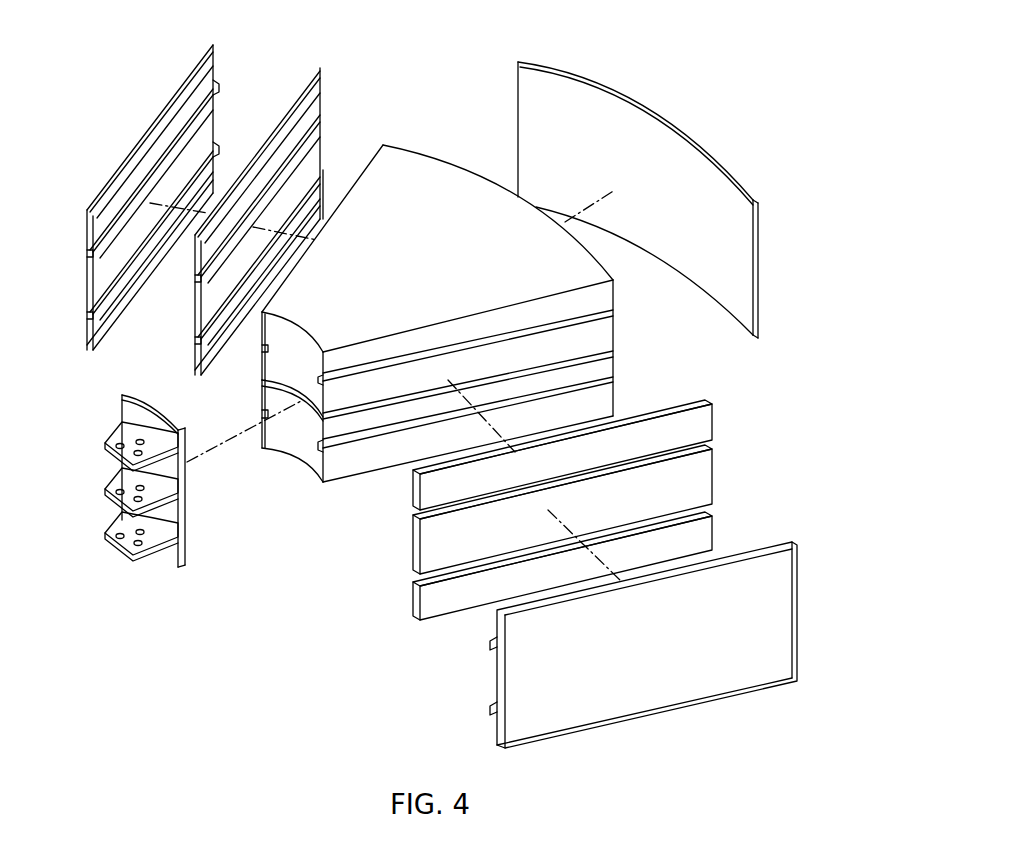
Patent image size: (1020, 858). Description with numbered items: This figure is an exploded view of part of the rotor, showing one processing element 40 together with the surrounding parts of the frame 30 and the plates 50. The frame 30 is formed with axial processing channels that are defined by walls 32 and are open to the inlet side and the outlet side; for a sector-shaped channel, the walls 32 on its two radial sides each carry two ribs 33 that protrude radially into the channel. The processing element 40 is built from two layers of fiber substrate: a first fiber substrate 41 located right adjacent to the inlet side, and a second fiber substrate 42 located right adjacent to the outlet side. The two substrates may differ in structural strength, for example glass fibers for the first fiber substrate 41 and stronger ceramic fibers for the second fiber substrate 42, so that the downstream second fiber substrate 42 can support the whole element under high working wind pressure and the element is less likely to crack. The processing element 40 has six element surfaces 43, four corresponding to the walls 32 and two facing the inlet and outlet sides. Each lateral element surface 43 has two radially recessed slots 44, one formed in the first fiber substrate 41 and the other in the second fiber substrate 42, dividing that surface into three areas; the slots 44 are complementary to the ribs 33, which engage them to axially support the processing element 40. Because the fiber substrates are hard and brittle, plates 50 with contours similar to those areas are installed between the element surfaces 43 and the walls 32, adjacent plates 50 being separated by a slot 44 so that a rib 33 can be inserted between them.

The frame 30 is at (415, 195).
The walls 32 is at (177, 106).
The ribs 33 is at (215, 78).
The processing element 40 is at (438, 305).
The first fiber substrate 41 is at (283, 363).
The second fiber substrate 42 is at (292, 450).
The element surfaces 43 is at (606, 337).
The slots 44 is at (606, 298).
The plates 50 is at (323, 212).